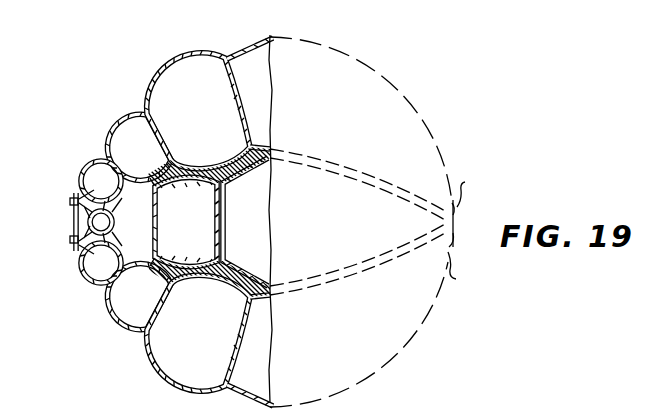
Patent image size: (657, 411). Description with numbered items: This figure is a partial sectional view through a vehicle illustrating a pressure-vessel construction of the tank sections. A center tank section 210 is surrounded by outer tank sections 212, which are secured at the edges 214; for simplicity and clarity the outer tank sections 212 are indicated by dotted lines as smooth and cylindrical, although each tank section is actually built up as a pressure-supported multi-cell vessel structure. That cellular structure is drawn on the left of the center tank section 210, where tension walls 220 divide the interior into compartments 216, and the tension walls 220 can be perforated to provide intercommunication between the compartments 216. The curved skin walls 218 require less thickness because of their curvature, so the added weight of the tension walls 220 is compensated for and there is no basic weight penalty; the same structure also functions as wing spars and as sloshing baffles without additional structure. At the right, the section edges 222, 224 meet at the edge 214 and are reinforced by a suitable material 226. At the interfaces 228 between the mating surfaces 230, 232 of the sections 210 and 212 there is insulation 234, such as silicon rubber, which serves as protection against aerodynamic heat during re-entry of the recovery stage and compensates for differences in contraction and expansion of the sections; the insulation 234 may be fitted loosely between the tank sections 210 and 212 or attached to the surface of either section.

The center tank section 210 is at (292, 225).
The outer tank section 212 is at (322, 125).
The edge 214 is at (476, 211).
The compartment 216 is at (191, 75).
The wall 218 is at (228, 158).
The tension wall 220 is at (228, 93).
The section edge 222 is at (465, 182).
The section edge 224 is at (455, 226).
The reinforcing material 226 is at (72, 250).
The interface 228 is at (278, 312).
The mating surface 230 is at (330, 290).
The mating surface 232 is at (370, 280).
The insulation 234 is at (182, 284).